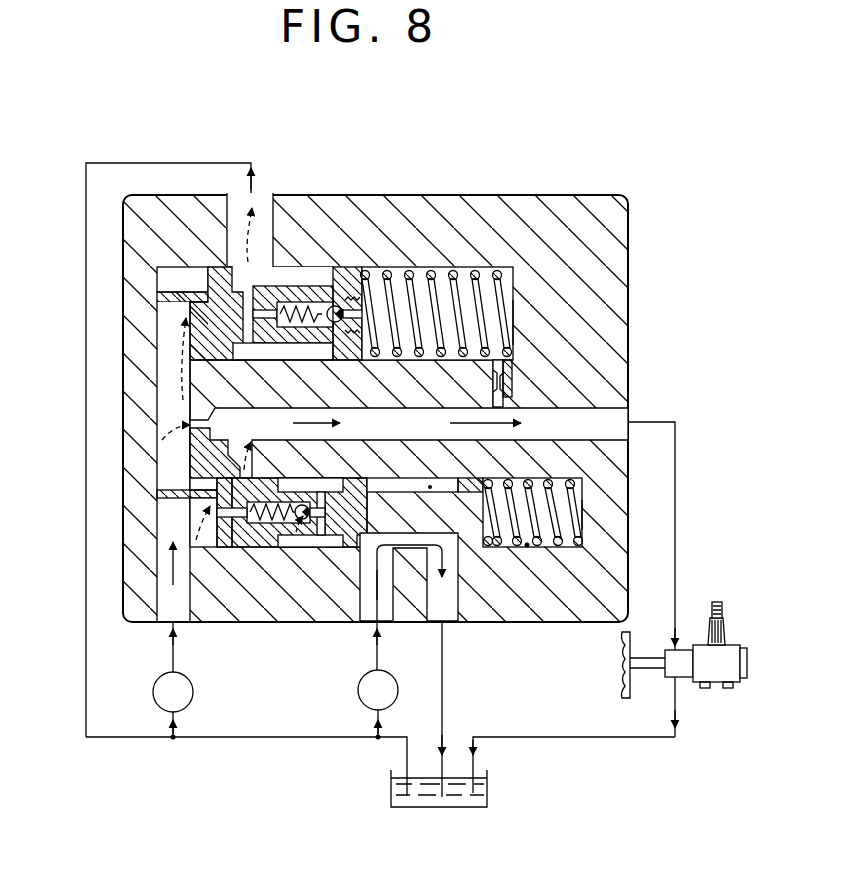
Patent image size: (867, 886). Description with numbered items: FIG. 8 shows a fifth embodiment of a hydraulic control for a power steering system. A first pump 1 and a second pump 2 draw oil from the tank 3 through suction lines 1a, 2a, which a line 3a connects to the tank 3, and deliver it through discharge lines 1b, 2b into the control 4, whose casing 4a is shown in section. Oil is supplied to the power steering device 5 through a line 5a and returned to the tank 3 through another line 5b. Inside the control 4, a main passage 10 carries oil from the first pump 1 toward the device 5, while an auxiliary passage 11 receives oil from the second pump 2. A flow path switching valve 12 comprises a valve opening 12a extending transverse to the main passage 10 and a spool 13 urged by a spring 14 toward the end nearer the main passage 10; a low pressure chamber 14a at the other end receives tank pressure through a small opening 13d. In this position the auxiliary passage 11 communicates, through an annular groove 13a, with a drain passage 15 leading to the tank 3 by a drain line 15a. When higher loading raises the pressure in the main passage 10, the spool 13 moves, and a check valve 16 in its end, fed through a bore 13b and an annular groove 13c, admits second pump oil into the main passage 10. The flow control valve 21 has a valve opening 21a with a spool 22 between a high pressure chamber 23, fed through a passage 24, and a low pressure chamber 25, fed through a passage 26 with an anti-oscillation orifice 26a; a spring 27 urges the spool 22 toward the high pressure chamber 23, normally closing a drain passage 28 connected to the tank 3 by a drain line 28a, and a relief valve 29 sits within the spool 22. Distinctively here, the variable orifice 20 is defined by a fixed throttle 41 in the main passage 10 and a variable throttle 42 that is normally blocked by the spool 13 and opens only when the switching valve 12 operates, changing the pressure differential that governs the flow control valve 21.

The first pump 1 is at (194, 690).
The suction line of the first pump 1a is at (176, 730).
The discharge line of the first pump 1b is at (174, 636).
The second pump 2 is at (398, 688).
The suction line of the second pump 2a is at (380, 728).
The discharge line of the second pump 2b is at (380, 636).
The tank 3 is at (433, 807).
The line connecting tank with suction lines 3a is at (268, 738).
The control 4 is at (612, 188).
The casing 4a is at (628, 258).
The power steering device 5 is at (720, 670).
The line 5a is at (676, 590).
The line 5b is at (565, 738).
The main passage 10 is at (162, 582).
The auxiliary passage 11 is at (376, 610).
The flow path switching valve 12 is at (336, 478).
The valve opening 12a is at (527, 547).
The spool 13 is at (405, 478).
The annular groove 13a is at (430, 489).
The bore 13b is at (328, 512).
The annular groove 13c is at (341, 547).
The small opening 13d is at (468, 482).
The spring 14 is at (557, 500).
The low pressure chamber 14a is at (567, 517).
The drain passage 15 is at (442, 600).
The drain line 15a is at (442, 705).
The check valve 16 is at (297, 528).
The variable orifice 20 is at (54, 448).
The flow control valve 21 is at (293, 268).
The valve opening 21a is at (442, 268).
The spool 22 is at (352, 286).
The high pressure chamber 23 is at (157, 285).
The passage 24 is at (160, 402).
The low pressure chamber 25 is at (492, 322).
The passage 26 is at (507, 397).
The orifice 26a is at (505, 383).
The spring 27 is at (476, 268).
The drain passage 28 is at (262, 225).
The drain line 28a is at (181, 163).
The relief valve 29 is at (340, 304).
The fixed throttle 41 is at (192, 432).
The variable throttle 42 is at (237, 466).